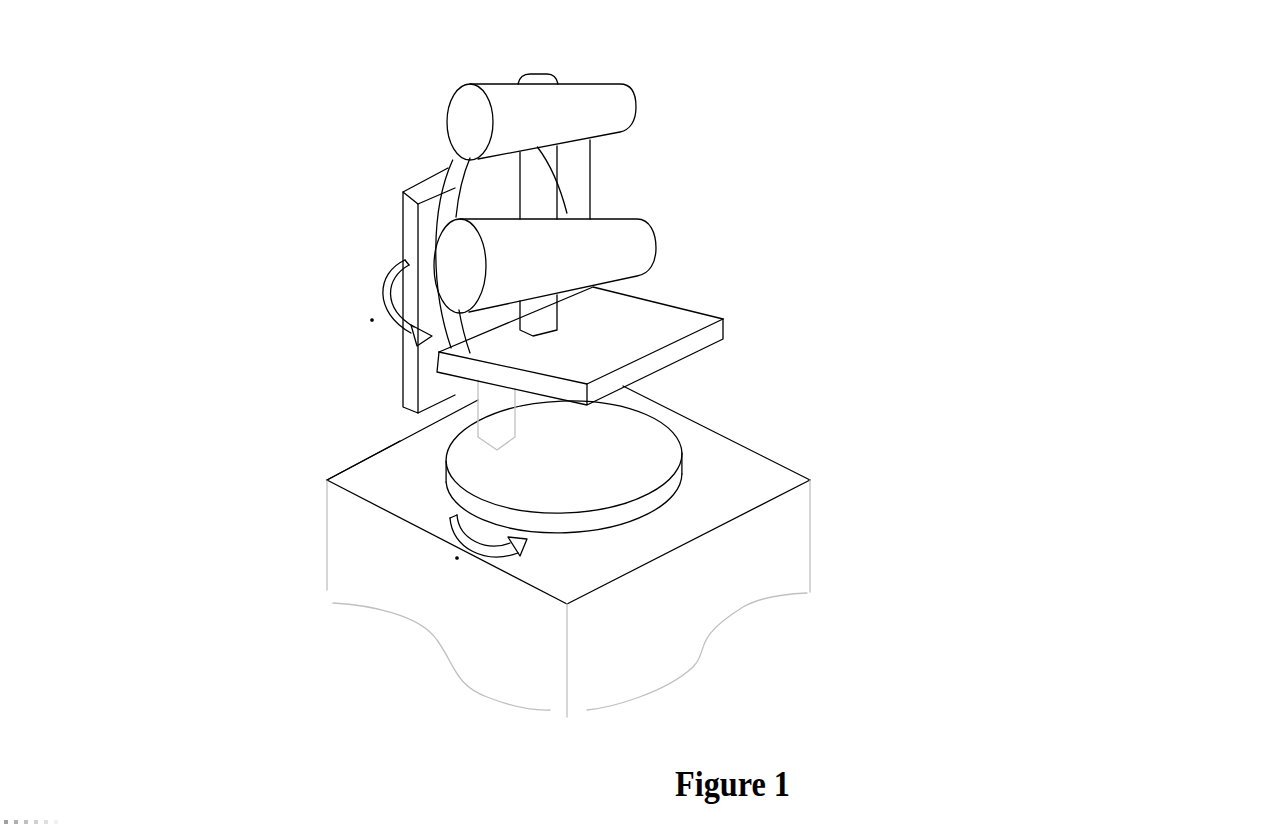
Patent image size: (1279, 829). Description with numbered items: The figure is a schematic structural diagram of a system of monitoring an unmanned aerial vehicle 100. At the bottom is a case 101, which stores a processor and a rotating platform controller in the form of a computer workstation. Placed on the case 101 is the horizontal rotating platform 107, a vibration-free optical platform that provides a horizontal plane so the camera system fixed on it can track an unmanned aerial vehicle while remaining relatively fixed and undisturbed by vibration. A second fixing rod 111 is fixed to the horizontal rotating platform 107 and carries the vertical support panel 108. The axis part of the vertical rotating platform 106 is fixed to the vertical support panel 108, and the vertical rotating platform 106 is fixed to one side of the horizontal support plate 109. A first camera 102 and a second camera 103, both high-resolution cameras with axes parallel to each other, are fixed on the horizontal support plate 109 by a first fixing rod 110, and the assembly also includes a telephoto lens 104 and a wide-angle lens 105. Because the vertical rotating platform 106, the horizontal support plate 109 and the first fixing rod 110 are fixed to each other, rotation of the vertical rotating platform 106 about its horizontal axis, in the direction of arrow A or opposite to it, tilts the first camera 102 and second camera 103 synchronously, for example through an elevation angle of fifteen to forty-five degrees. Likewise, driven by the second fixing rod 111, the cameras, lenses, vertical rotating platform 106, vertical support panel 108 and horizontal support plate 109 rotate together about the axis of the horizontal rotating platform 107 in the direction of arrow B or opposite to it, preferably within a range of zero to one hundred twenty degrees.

The system of monitoring an unmanned aerial vehicle 100 is at (990, 238).
The case 101 is at (740, 490).
The first camera 102 is at (640, 125).
The second camera 103 is at (640, 245).
The telephoto lens 104 is at (388, 287).
The wide-angle lens 105 is at (447, 121).
The vertical rotating platform 106 is at (445, 203).
The horizontal rotating platform 107 is at (670, 463).
The vertical support panel 108 is at (403, 192).
The horizontal support plate 109 is at (723, 333).
The first fixing rod 110 is at (586, 164).
The second fixing rod 111 is at (420, 432).
The direction of arrow A is at (372, 320).
The direction of arrow B is at (457, 558).